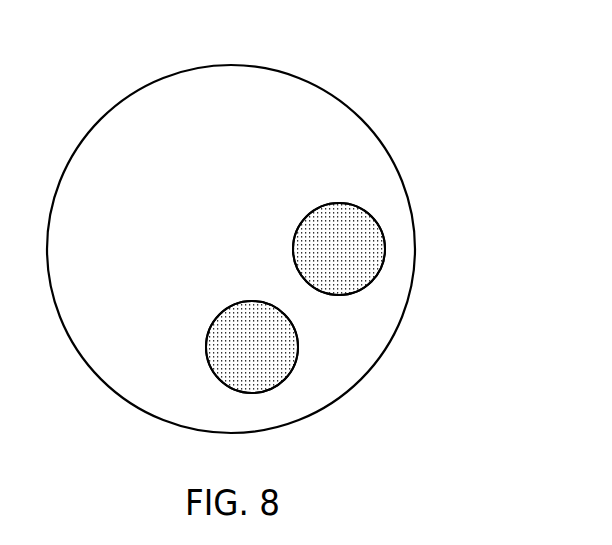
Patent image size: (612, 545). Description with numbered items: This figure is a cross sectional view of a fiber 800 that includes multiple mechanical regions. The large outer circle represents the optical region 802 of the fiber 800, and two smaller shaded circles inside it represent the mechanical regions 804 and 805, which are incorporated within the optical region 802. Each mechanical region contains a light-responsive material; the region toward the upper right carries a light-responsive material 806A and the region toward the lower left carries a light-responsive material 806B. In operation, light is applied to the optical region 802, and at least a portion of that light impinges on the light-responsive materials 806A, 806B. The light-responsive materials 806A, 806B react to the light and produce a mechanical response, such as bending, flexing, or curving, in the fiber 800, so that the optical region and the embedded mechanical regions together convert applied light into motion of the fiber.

The fiber 800 is at (424, 127).
The optical region 802 is at (258, 85).
The mechanical region 804 is at (304, 210).
The mechanical region 805 is at (224, 303).
The light-responsive material 806A is at (365, 237).
The light-responsive material 806B is at (273, 372).